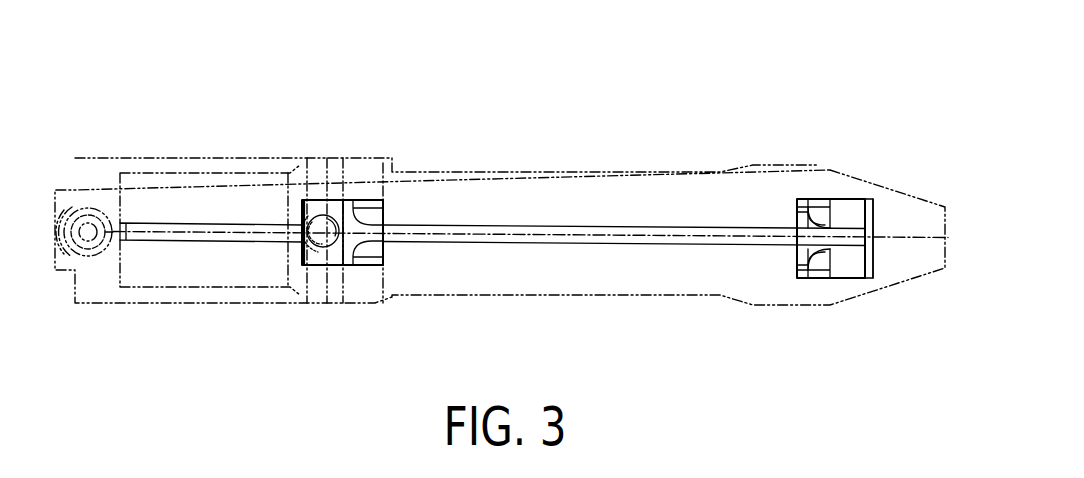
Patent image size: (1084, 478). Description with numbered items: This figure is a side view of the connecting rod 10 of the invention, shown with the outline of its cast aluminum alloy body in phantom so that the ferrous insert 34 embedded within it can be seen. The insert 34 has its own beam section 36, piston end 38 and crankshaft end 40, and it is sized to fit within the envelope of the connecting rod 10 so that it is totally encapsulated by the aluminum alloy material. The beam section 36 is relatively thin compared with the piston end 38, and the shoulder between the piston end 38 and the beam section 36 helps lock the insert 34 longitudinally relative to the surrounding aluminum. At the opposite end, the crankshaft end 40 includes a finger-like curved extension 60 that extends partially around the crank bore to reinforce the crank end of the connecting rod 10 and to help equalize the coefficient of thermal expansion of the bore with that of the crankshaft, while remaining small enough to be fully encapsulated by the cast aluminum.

The connecting rod 10 is at (588, 148).
The insert 34 is at (874, 223).
The beam section 36 is at (557, 245).
The piston end 38 is at (815, 198).
The crankshaft end 40 is at (234, 222).
The curved extension 60 is at (160, 242).